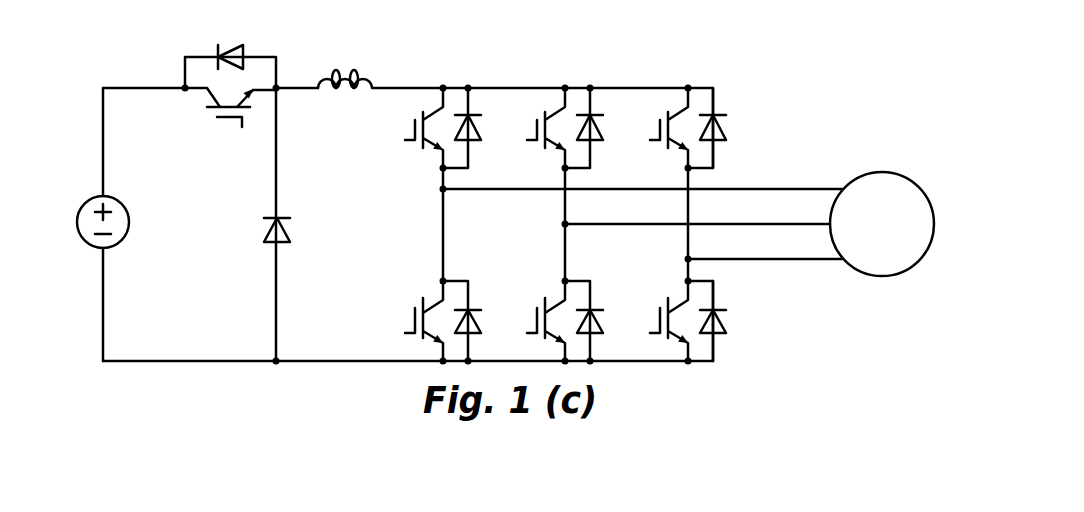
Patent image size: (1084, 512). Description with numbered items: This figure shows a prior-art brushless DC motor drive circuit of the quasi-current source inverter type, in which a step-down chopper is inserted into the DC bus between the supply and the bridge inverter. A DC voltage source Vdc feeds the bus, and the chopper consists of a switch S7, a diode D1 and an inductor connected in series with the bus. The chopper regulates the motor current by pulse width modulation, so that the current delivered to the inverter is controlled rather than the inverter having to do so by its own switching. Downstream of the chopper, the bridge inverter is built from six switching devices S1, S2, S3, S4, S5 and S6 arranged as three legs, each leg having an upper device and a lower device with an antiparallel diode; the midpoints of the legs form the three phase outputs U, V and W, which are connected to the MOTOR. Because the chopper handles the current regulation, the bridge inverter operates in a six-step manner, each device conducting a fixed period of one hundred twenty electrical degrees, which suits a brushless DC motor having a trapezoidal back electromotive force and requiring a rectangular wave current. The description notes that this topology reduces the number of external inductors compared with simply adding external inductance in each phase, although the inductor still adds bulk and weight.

The upper-arm switching element (IGBT) of U phase S1 is at (430, 130).
The upper-arm switching element (IGBT) of V phase S2 is at (553, 130).
The upper-arm switching element (IGBT) of W phase S3 is at (674, 130).
The lower-arm switching element (IGBT) of U phase S4 is at (430, 320).
The lower-arm switching element (IGBT) of V phase S5 is at (548, 320).
The lower-arm switching element (IGBT) of W phase S6 is at (674, 320).
The chopper switching element (IGBT) with antiparallel diode S7 is at (230, 97).
The freewheeling diode D1 is at (296, 224).
The DC voltage source Vdc is at (128, 222).
The U-phase output terminal U is at (625, 195).
The V-phase output terminal V is at (681, 225).
The W-phase output terminal W is at (744, 260).
The motor MOTOR is at (883, 207).